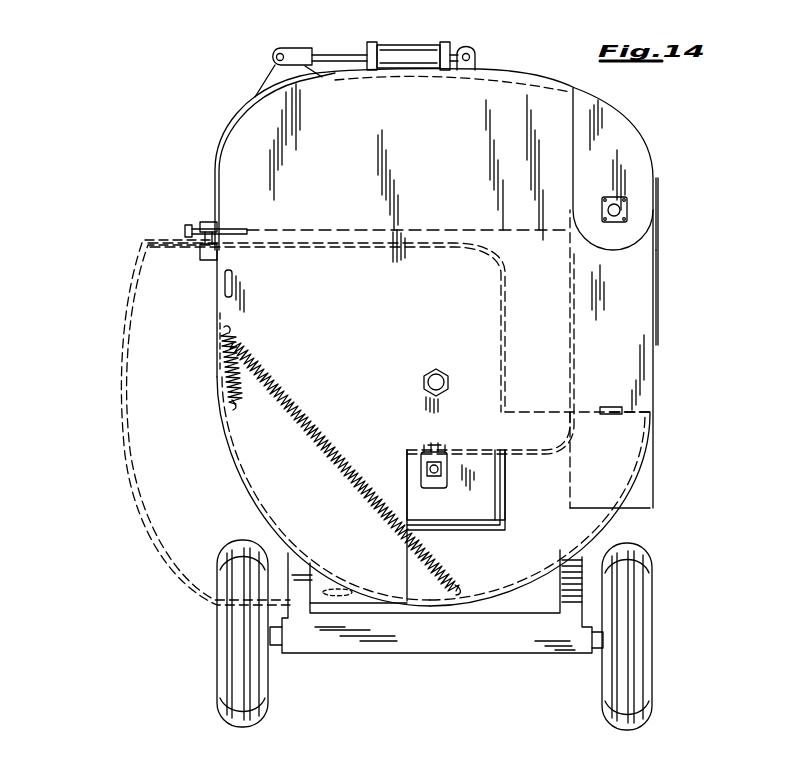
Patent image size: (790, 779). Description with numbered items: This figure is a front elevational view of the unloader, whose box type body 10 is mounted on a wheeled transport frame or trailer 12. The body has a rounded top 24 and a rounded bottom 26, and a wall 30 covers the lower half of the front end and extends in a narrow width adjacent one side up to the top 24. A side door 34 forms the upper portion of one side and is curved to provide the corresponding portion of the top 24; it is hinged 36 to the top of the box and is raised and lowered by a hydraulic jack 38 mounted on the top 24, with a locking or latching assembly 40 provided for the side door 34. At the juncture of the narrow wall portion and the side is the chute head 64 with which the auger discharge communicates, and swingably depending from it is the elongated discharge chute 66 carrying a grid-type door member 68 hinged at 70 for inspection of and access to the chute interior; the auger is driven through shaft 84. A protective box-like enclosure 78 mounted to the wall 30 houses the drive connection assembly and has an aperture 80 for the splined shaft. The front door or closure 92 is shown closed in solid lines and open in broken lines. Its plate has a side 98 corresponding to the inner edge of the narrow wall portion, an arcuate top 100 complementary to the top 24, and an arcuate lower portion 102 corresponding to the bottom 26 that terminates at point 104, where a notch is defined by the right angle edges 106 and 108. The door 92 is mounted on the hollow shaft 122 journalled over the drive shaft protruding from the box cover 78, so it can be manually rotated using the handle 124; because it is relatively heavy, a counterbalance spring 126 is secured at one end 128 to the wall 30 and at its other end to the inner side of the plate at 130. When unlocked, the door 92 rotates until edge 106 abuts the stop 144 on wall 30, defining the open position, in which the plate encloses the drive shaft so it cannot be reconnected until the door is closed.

The body 10 is at (216, 136).
The wheeled transport frame or trailer 12 is at (447, 662).
The rounded top 24 is at (512, 73).
The rounded bottom 26 is at (612, 517).
The wall 30 is at (415, 228).
The side door 34 is at (229, 116).
The hinge 36 is at (322, 75).
The hydraulic jack 38 is at (414, 37).
The locking or latching assembly 40 is at (199, 219).
The chute head 64 is at (645, 152).
The discharge chute 66 is at (650, 484).
The door member 68 is at (658, 298).
The hinge 70 is at (657, 181).
The protective box-like enclosure 78 is at (500, 513).
The aperture 80 is at (452, 472).
The shaft 84 is at (626, 207).
The door or closure 92 is at (207, 175).
The side 98 is at (365, 243).
The arcuate top 100 is at (545, 81).
The arcuate lower portion 102 is at (242, 486).
The point 104 is at (407, 604).
The edge 106 is at (636, 412).
The edge 108 is at (508, 360).
The hollow shaft 122 is at (443, 388).
The handle 124 is at (223, 288).
The counterbalance spring 126 is at (224, 375).
The end 128 is at (231, 326).
The attachment point 130 is at (231, 400).
The stop 144 is at (611, 406).